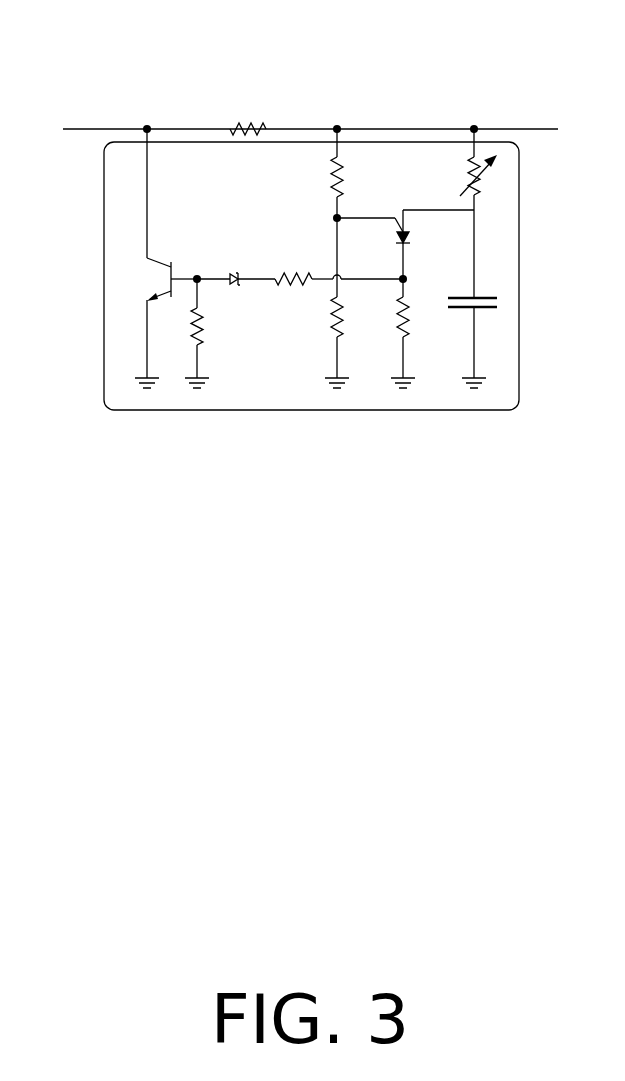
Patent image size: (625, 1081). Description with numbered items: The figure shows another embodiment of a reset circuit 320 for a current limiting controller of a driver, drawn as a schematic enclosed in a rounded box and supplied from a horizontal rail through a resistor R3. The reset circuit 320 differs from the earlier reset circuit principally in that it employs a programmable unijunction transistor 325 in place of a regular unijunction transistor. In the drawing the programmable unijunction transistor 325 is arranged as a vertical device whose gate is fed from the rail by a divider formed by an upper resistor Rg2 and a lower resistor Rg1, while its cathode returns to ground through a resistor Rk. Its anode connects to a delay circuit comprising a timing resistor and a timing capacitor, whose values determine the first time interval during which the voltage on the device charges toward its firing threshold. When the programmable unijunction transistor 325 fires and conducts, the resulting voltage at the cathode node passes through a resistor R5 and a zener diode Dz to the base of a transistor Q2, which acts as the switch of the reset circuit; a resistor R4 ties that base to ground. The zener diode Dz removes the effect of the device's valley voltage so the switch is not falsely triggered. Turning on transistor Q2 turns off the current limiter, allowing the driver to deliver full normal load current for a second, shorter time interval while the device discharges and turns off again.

The reset circuit 320 is at (285, 410).
The programmable unijunction transistor 325 is at (404, 190).
The resistor R3 is at (248, 115).
The transistor Q2 is at (157, 253).
The resistor R4 is at (212, 328).
The zener diode Dz is at (236, 265).
The resistor R5 is at (293, 265).
The resistor Rg2 is at (321, 173).
The resistor Rg1 is at (322, 298).
The resistor Rk is at (390, 328).